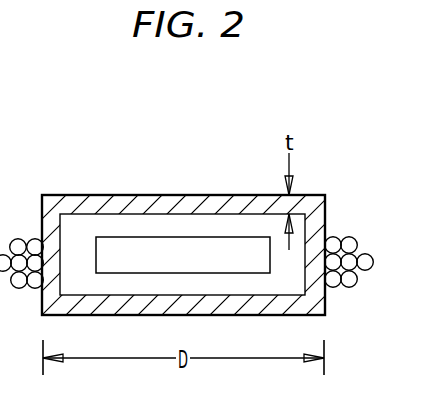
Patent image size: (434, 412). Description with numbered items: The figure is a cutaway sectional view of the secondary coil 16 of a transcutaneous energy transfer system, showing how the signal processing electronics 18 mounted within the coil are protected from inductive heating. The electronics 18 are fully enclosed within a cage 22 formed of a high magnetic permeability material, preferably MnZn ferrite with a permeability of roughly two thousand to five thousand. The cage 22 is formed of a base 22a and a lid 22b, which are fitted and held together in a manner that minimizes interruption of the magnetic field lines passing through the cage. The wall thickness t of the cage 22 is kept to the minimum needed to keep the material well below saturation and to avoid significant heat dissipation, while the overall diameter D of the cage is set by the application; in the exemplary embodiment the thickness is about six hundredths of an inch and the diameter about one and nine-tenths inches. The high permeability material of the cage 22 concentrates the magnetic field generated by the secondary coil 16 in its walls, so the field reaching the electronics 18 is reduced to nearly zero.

The secondary coil 16 is at (347, 247).
The signal processing electronics 18 is at (122, 237).
The cage 22 is at (225, 190).
The base 22a is at (160, 205).
The lid 22b is at (219, 312).